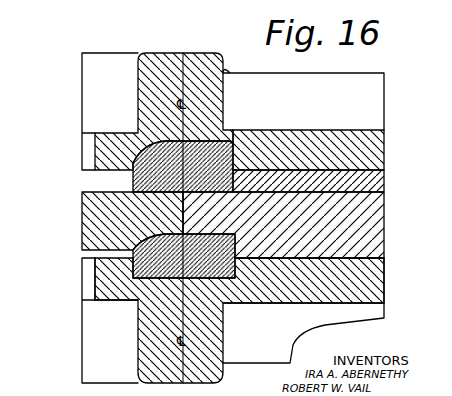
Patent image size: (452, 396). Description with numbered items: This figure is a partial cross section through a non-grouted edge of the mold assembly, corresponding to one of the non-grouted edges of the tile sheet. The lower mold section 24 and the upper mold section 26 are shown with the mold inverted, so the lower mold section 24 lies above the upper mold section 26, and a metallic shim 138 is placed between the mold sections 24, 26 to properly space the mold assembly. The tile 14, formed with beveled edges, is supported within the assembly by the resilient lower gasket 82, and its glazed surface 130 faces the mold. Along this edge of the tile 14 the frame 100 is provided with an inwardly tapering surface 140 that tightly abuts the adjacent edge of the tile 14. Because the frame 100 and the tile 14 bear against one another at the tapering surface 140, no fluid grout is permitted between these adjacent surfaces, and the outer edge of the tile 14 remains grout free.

The tile 14 is at (0, 204).
The lower mold section 24 is at (310, 130).
The upper mold section 26 is at (287, 292).
The lower gasket 82 is at (225, 130).
The frame 100 is at (377, 218).
The glazed surface 130 is at (50, 283).
The metallic shim 138 is at (385, 178).
The inwardly tapering surface 140 is at (168, 221).